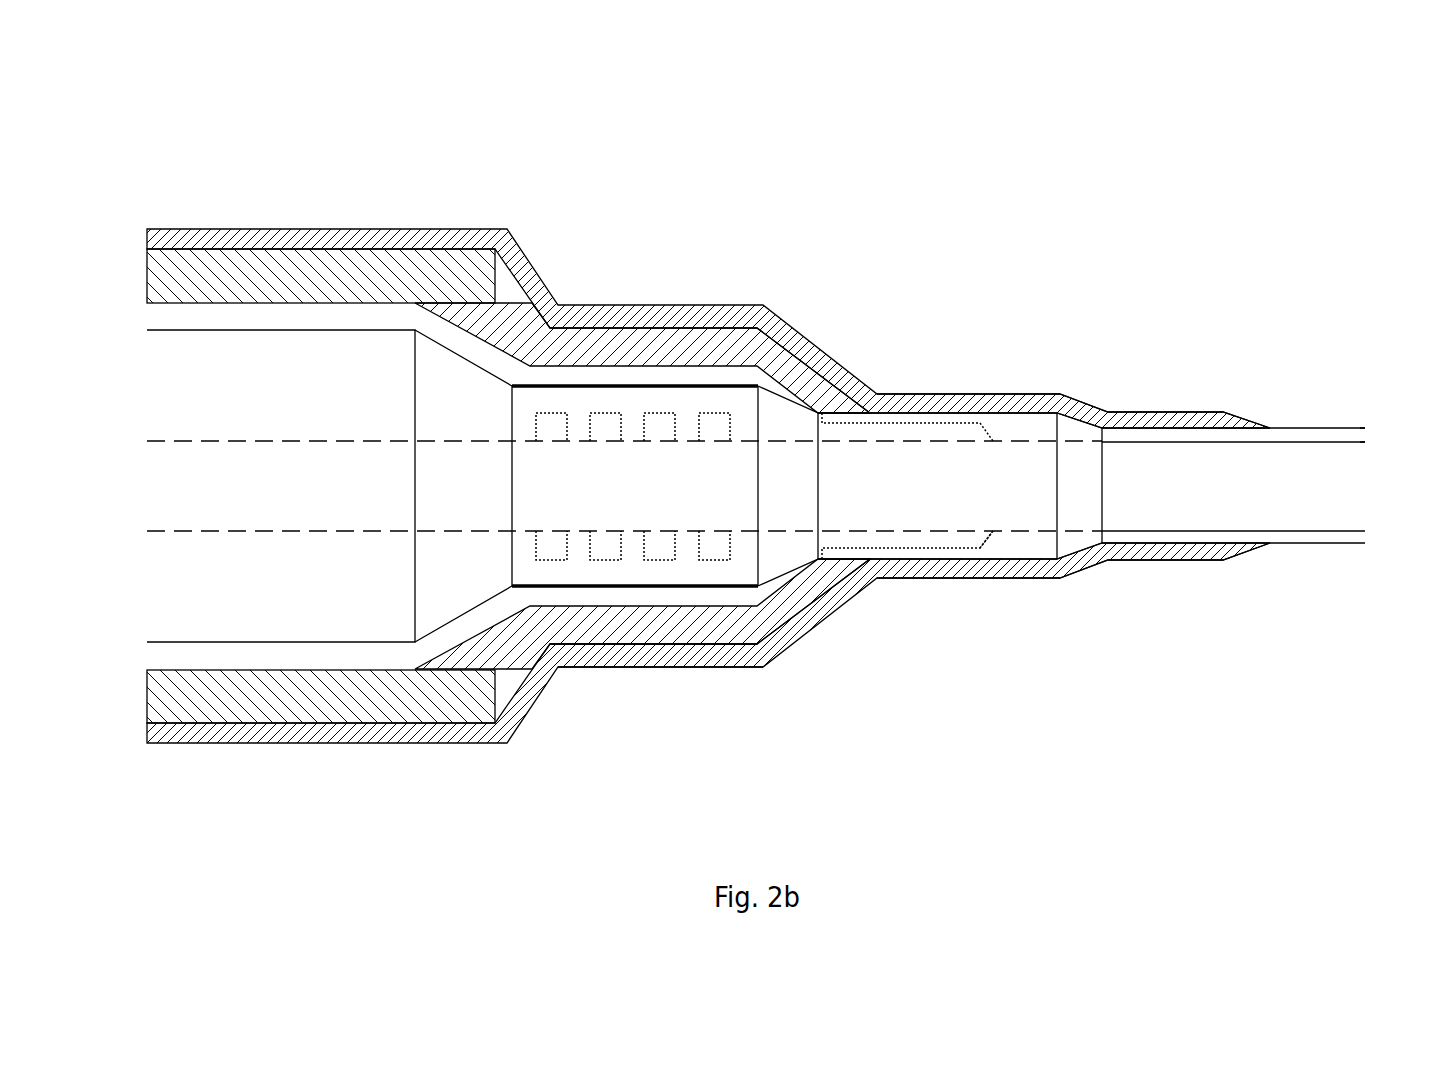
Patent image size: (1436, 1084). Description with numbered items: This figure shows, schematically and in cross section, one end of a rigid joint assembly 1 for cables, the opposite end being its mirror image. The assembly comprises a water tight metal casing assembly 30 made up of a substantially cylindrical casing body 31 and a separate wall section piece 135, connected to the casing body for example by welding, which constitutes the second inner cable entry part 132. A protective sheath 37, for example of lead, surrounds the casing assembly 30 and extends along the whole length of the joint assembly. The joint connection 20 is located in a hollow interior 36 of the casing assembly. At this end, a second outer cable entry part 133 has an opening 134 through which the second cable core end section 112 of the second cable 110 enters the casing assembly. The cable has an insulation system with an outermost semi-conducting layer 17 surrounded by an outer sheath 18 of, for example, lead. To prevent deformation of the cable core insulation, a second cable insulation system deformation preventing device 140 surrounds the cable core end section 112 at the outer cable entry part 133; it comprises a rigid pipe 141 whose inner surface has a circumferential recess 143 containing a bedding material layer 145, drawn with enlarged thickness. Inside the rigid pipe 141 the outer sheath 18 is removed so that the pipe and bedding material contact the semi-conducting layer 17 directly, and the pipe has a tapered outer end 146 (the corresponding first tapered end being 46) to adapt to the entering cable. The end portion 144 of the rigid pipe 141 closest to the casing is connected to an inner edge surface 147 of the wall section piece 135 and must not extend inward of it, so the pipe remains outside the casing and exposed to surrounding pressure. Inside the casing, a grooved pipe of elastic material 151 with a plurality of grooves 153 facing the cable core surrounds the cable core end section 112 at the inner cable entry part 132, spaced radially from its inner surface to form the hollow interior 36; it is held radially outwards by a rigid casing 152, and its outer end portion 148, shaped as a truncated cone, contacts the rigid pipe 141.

The rigid joint assembly 1 is at (756, 424).
The outermost semi-conducting layer 17 is at (1356, 440).
The outer sheath 18 is at (1289, 435).
The joint connection 20 is at (448, 350).
The casing assembly 30 is at (327, 552).
The casing body 31 is at (276, 262).
The hollow interior 36 is at (744, 600).
The protective sheath 37 is at (329, 743).
The tapered outer end 46 is at (368, 735).
The second cable 110 is at (1250, 609).
The second cable core end section 112 is at (1080, 447).
The second inner cable entry part 132 is at (656, 708).
The second outer cable entry part 133 is at (939, 623).
The opening 134 is at (1233, 549).
The wall section piece 135 is at (577, 620).
The second cable insulation system deformation preventing device 140 is at (943, 413).
The rigid pipe 141 is at (950, 404).
The circumferential recess 143 is at (1009, 574).
The end portion 144 is at (844, 350).
The bedding material layer 145 is at (903, 430).
The tapered outer end 146 is at (1080, 545).
The inner edge surface 147 is at (832, 611).
The outer end portion 148 is at (785, 392).
The grooved pipe of elastic material 151 is at (752, 395).
The rigid casing 152 is at (627, 392).
The grooves 153 is at (700, 415).